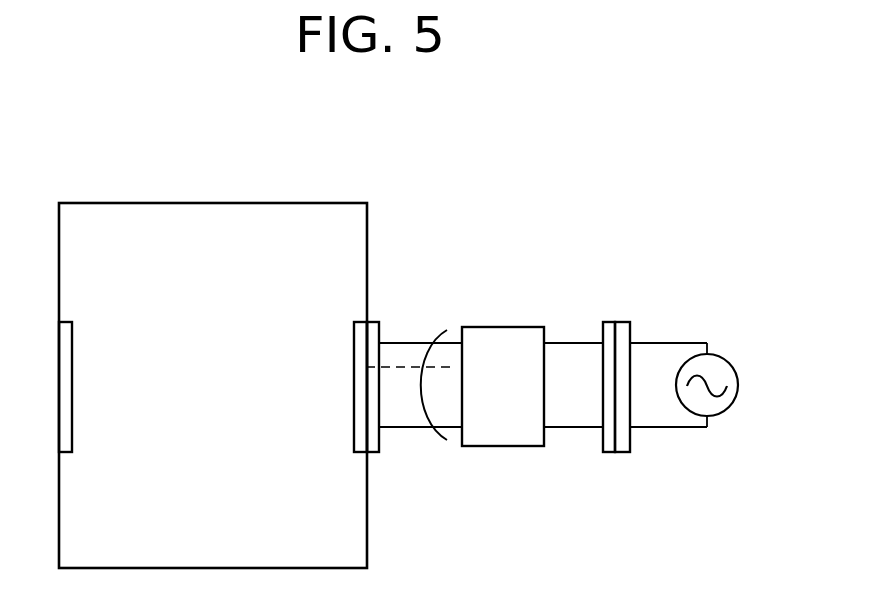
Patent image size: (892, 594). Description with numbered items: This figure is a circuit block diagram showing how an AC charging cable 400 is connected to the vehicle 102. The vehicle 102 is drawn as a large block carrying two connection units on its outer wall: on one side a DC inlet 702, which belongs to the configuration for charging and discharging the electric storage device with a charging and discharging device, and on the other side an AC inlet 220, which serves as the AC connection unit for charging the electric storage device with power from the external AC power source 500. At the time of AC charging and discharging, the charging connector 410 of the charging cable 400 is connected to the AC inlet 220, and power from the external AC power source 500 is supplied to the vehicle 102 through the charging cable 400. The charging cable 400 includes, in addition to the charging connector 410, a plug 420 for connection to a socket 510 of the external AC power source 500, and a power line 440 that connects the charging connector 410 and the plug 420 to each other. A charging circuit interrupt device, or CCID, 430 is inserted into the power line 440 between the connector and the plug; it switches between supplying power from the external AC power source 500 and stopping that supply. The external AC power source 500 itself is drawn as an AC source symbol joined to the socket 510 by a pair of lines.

The vehicle 102 is at (213, 203).
The DC inlet 702 is at (67, 322).
The AC inlet 220 is at (357, 322).
The charging cable 400 is at (617, 303).
The charging connector 410 is at (373, 452).
The power line 440 is at (440, 440).
The charging circuit interrupt device (CCID) 430 is at (523, 447).
The plug 420 is at (612, 452).
The socket 510 is at (622, 322).
The external AC power source 500 is at (727, 361).